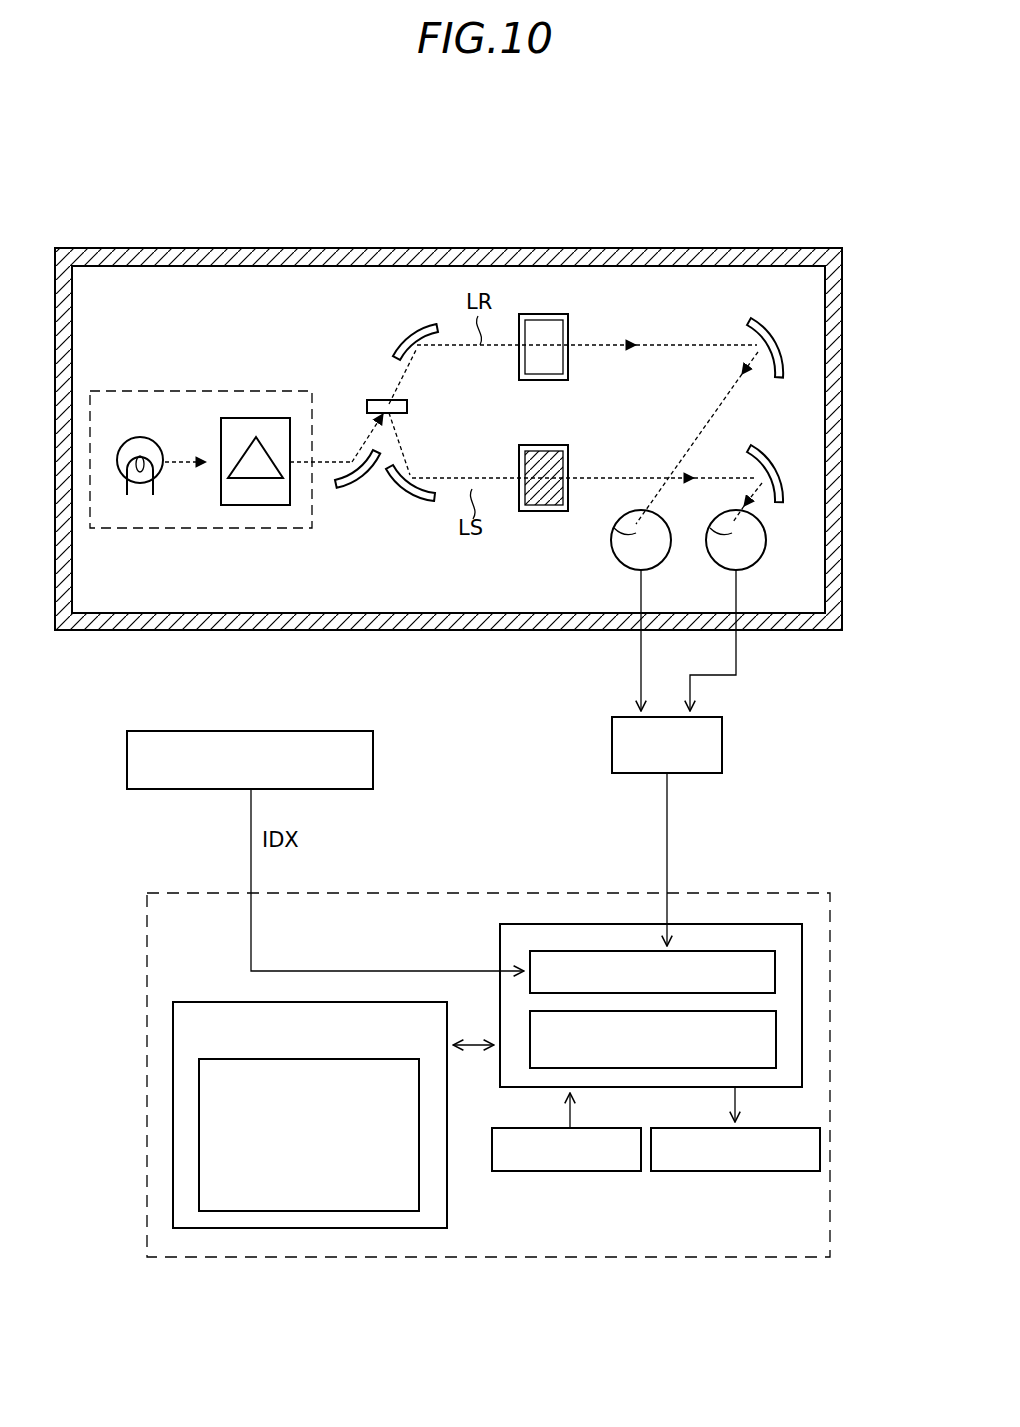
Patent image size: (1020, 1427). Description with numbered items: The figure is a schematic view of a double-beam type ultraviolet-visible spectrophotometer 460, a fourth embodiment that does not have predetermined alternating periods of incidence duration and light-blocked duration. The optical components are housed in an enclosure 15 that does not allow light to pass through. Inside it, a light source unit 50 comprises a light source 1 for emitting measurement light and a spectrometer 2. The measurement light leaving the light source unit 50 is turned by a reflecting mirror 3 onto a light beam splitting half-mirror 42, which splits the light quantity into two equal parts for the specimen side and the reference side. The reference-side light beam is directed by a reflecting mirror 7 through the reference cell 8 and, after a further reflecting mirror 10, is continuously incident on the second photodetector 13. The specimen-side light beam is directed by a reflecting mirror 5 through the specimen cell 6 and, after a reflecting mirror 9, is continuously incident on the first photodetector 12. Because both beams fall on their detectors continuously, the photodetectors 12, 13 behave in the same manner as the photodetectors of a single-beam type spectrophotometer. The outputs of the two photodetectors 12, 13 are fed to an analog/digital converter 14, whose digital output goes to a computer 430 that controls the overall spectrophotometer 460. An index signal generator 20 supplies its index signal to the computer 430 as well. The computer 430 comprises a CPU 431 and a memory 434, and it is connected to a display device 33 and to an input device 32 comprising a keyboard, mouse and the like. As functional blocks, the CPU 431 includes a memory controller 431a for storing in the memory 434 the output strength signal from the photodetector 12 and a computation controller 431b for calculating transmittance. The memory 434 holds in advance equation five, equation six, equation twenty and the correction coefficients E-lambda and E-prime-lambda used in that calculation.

The ultraviolet-visible spectrophotometer 460 is at (447, 168).
The enclosure 15 is at (113, 248).
The light source unit 50 is at (198, 391).
The light source 1 is at (140, 437).
The spectrometer 2 is at (260, 418).
The reflecting mirror 3 is at (350, 484).
The half-mirror 42 is at (378, 400).
The reflecting mirror 7 is at (413, 332).
The reflecting mirror 5 is at (410, 497).
The reference cell 8 is at (545, 314).
The specimen cell 6 is at (543, 512).
The reflecting mirror 10 is at (772, 328).
The reflecting mirror 9 is at (772, 454).
The second photodetector 13 is at (660, 562).
The first photodetector 12 is at (757, 562).
The analog/digital converter 14 is at (722, 746).
The index signal generator 20 is at (130, 731).
The computer 430 is at (147, 913).
The CPU 431 is at (760, 924).
The memory controller 431a is at (775, 966).
The computation controller 431b is at (776, 1041).
The memory 434 is at (173, 1096).
The input device 32 is at (570, 1172).
The display device 33 is at (735, 1172).